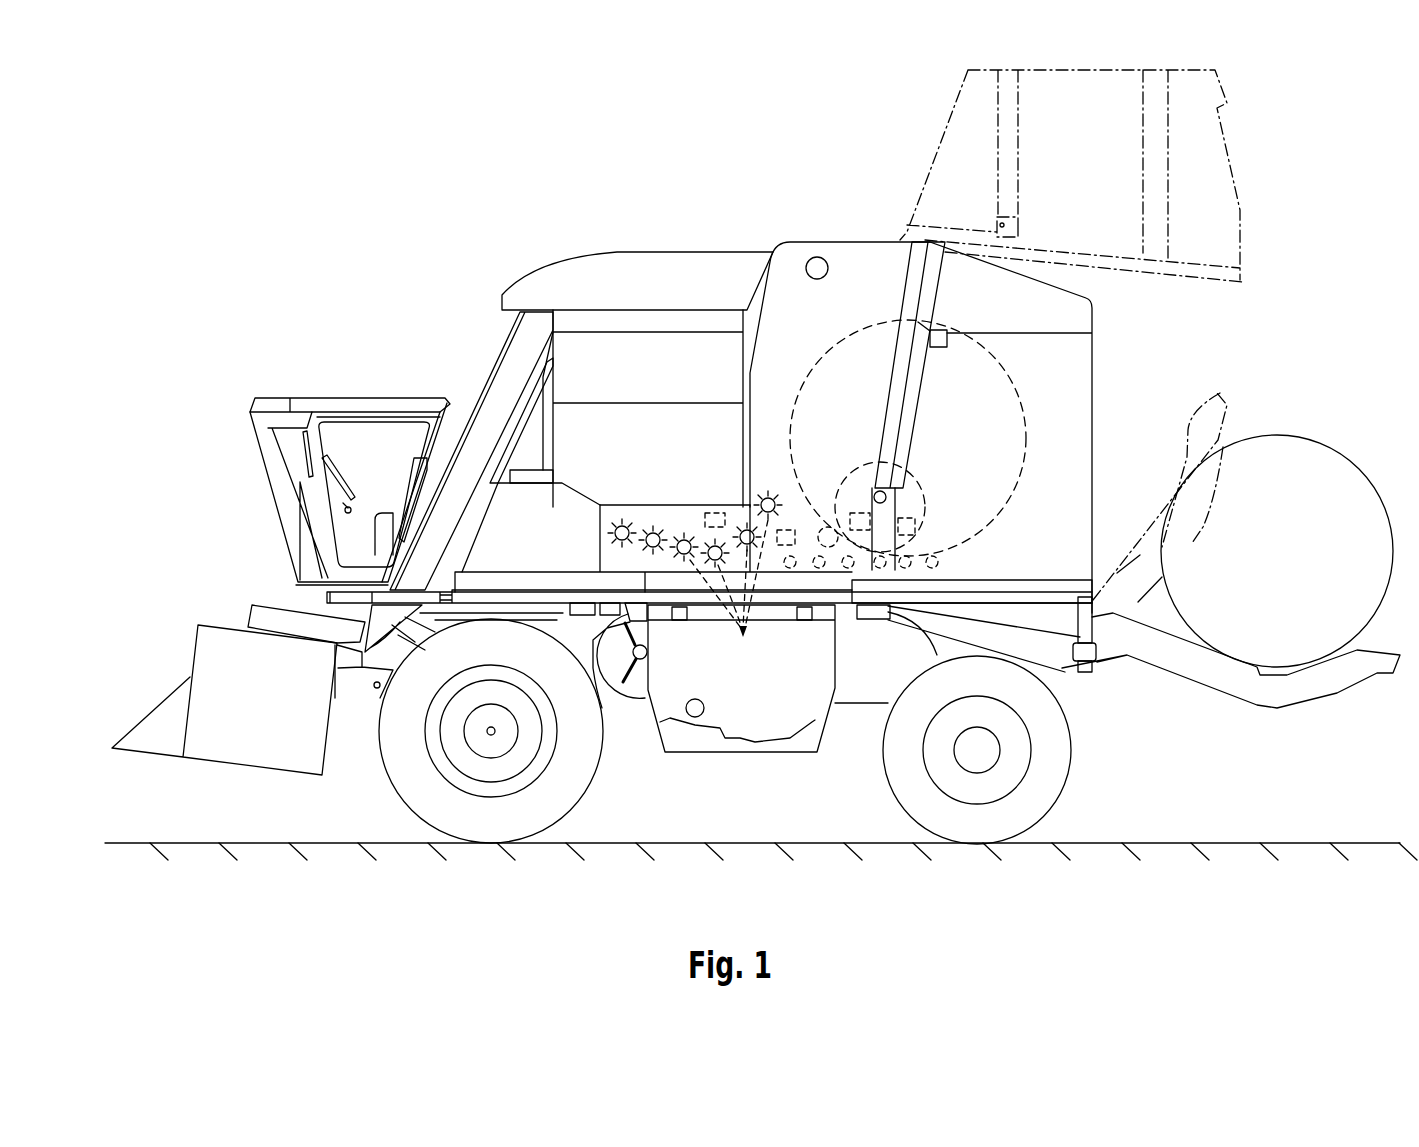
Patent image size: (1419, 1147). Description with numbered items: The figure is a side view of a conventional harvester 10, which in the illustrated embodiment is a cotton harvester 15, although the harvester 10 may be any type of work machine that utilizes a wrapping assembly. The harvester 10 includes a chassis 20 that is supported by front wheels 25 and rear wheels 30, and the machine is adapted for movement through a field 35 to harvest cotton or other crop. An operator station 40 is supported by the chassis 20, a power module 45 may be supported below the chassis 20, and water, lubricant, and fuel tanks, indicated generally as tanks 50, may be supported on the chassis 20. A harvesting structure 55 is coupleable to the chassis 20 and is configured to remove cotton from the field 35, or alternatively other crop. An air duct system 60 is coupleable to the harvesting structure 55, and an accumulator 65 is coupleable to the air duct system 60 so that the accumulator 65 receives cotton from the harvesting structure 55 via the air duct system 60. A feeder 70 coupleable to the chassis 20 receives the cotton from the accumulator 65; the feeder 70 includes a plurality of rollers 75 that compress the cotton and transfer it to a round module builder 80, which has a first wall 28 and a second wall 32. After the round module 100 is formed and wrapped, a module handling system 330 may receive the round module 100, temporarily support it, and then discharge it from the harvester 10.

The harvester 10 is at (220, 180).
The cotton harvester 15 is at (358, 322).
The chassis 20 is at (495, 588).
The front wheels 25 is at (565, 775).
The first wall 28 is at (1082, 291).
The rear wheels 30 is at (1052, 753).
The second wall 32 is at (797, 319).
The field 35 is at (1232, 840).
The operator station 40 is at (312, 400).
The power module 45 is at (762, 685).
The tanks 50 is at (535, 498).
The harvesting structure 55 is at (258, 713).
The air duct system 60 is at (520, 348).
The accumulator 65 is at (627, 352).
The feeder 70 is at (688, 518).
The rollers 75 is at (650, 530).
The round module builder 80 is at (832, 184).
The round module 100 is at (1287, 360).
The module handling system 330 is at (1142, 558).